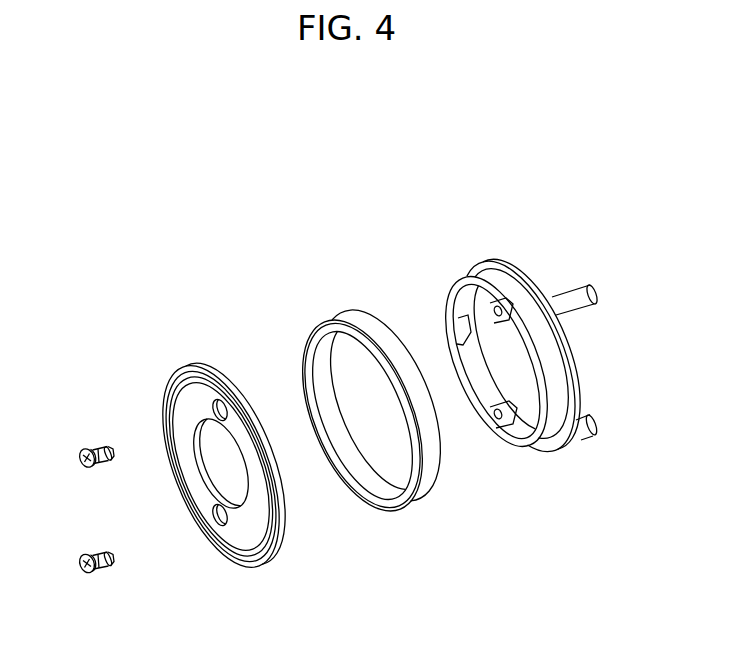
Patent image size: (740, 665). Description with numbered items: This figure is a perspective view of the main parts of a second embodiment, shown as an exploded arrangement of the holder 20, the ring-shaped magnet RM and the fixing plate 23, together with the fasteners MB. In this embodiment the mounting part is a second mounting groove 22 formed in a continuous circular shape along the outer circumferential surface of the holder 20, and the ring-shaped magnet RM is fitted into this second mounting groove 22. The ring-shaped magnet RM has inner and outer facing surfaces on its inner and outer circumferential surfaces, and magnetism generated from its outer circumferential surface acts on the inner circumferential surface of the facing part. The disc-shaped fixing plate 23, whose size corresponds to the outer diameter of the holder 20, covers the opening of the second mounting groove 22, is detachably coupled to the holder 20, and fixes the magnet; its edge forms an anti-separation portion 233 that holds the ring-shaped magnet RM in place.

The mounting bolts MB is at (32, 300).
The fixing plate 23 is at (242, 522).
The anti-separation portion 233 is at (263, 557).
The ring-shaped magnet RM is at (427, 487).
The holder 20 is at (553, 447).
The second mounting groove 22 is at (557, 402).